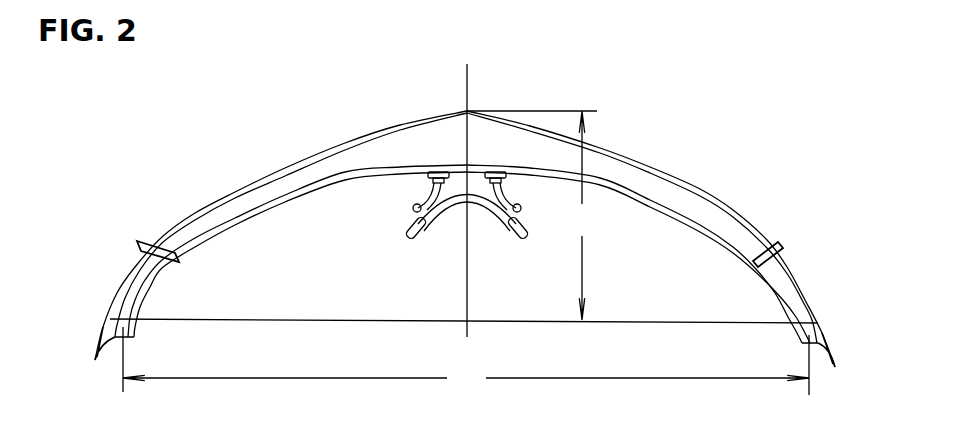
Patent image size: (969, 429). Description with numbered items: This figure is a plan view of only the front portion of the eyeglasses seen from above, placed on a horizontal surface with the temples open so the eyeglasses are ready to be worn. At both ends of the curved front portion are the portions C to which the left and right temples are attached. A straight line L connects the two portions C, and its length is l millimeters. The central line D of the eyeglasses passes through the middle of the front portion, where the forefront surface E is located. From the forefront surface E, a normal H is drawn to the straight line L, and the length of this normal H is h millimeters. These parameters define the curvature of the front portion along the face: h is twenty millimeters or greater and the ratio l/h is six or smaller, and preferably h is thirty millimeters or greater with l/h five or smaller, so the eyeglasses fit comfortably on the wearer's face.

The portions to which the left and right temples are attached C is at (109, 309).
The central line D is at (468, 90).
The forefront surface E is at (452, 105).
The normal H is at (483, 284).
The straight line L is at (344, 310).
The length of the normal h is at (580, 215).
The length of the straight line l is at (466, 361).